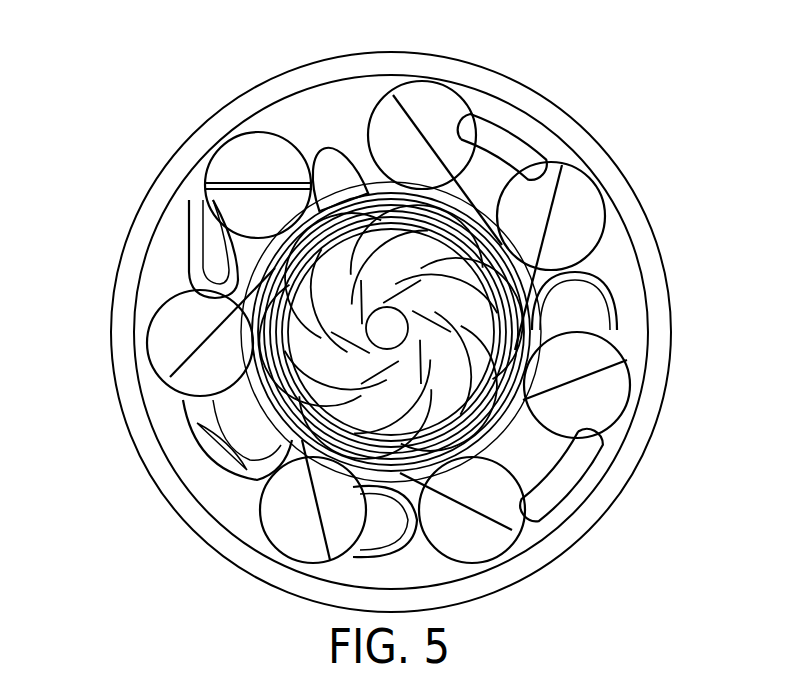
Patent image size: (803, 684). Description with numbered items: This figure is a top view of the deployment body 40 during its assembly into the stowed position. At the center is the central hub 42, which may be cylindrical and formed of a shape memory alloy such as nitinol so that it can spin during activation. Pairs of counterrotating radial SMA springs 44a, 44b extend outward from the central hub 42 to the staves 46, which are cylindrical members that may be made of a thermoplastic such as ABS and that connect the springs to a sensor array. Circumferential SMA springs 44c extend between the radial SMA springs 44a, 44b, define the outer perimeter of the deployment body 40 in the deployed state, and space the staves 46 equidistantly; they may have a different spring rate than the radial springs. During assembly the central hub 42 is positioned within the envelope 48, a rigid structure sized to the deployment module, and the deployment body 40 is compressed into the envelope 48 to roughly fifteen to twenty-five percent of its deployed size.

The deployment body 40 is at (225, 162).
The central hub 42 is at (378, 270).
The radial SMA spring 44a is at (305, 270).
The radial SMA spring 44b is at (497, 248).
The circumferential SMA spring 44c is at (245, 483).
The stave 46 is at (440, 108).
The envelope 48 is at (570, 118).